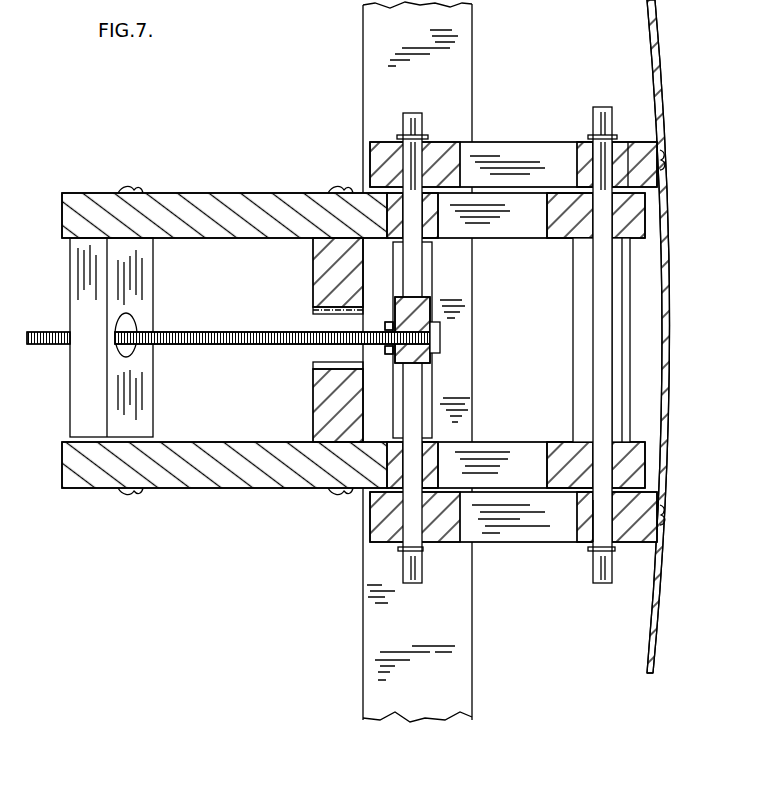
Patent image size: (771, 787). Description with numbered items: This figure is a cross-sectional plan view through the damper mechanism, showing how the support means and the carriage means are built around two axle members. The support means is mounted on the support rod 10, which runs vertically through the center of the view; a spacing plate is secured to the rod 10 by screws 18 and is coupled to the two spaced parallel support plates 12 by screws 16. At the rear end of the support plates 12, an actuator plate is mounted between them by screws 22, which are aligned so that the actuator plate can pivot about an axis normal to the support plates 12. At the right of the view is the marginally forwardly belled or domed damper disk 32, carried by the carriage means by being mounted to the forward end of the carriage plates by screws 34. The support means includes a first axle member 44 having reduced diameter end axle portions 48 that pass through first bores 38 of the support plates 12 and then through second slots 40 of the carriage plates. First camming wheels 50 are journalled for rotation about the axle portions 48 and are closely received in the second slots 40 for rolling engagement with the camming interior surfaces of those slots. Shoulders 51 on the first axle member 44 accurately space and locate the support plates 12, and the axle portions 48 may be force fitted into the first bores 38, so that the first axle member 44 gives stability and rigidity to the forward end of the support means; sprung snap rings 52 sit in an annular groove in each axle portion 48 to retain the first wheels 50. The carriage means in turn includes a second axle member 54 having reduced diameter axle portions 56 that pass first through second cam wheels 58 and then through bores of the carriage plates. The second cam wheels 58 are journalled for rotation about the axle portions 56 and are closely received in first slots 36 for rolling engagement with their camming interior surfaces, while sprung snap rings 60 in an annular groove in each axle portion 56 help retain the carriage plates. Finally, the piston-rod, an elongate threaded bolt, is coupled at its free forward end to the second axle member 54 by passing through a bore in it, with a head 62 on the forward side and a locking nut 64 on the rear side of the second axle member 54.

The support rod 10 is at (426, 42).
The support plates 12 is at (66, 215).
The screws 16 is at (340, 190).
The screws 18 is at (313, 270).
The screws 22 is at (136, 190).
The damper disk 32 is at (658, 368).
The screws 34 is at (664, 150).
The first slots 36 is at (505, 233).
The first bores 38 is at (590, 213).
The second slots 40 is at (512, 150).
The first axle member 44 is at (610, 366).
The axle portions 48 is at (603, 107).
The first camming wheels 50 is at (584, 145).
The shoulders 51 is at (578, 244).
The sprung snap rings 52 is at (586, 558).
The second axle member 54 is at (423, 404).
The axle portions 56 is at (411, 113).
The second cam wheels 58 is at (440, 234).
The sprung snap rings 60 is at (428, 560).
The head 62 is at (441, 337).
The locking nut 64 is at (389, 356).